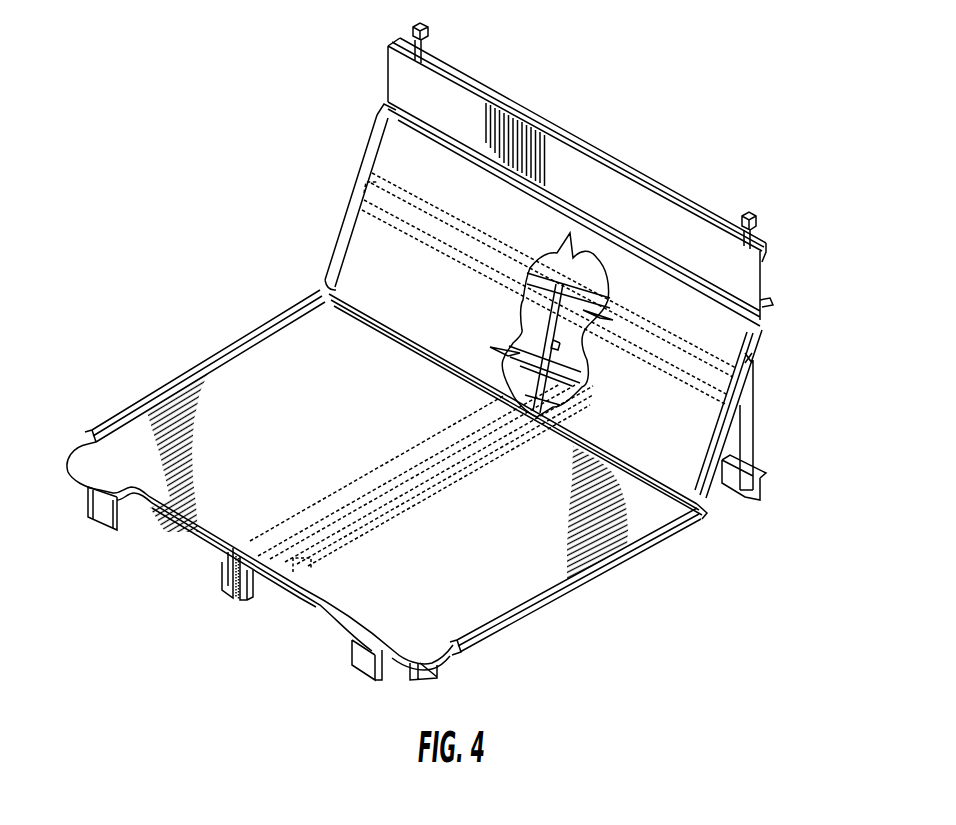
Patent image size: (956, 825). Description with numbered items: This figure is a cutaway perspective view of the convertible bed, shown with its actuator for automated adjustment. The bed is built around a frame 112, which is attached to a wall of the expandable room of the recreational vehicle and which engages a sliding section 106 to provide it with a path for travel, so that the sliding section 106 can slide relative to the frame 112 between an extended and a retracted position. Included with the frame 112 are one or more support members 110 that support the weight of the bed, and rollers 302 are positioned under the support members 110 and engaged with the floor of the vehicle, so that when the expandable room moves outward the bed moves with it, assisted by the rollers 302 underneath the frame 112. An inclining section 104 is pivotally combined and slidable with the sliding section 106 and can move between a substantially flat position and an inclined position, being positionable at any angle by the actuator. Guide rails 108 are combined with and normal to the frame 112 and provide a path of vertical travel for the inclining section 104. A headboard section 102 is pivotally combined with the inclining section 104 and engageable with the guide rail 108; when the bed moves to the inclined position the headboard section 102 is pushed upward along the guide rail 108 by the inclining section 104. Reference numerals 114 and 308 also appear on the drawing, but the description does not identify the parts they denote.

The headboard section 102 is at (770, 261).
The inclining section 104 is at (752, 358).
The sliding section 106 is at (652, 542).
The guide rail 108 is at (752, 233).
The support member 110 is at (369, 684).
The frame 112 is at (249, 607).
The mounting tab 114 is at (105, 534).
The roller 302 is at (437, 681).
The slot 308 is at (312, 574).